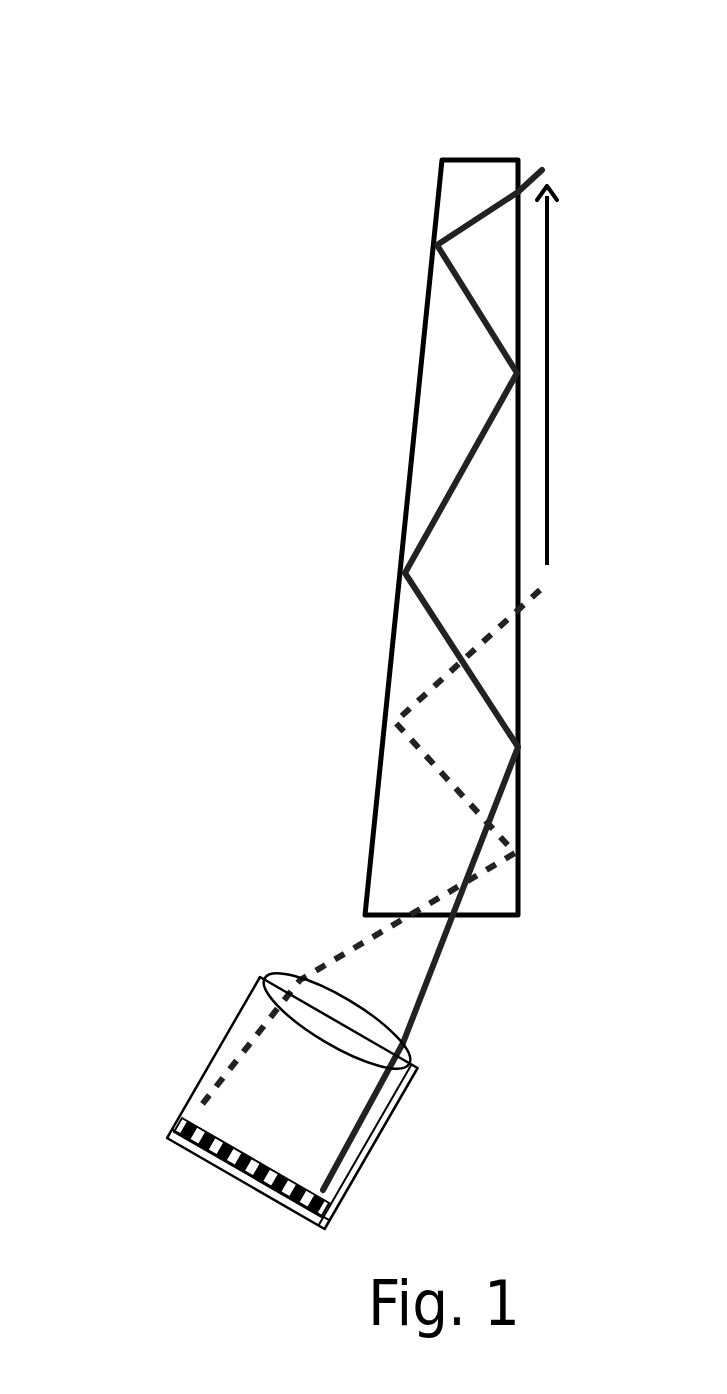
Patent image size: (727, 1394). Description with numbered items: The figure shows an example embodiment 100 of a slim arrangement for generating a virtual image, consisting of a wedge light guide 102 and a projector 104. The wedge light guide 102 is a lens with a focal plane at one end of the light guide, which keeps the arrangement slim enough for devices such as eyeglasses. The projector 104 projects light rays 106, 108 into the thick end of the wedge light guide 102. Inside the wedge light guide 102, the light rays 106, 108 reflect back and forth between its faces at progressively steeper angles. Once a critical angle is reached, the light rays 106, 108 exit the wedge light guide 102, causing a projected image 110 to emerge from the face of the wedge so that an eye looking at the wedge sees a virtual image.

The example embodiment 100 is at (115, 57).
The wedge light guide 102 is at (456, 160).
The projector 104 is at (260, 977).
The light ray 106 is at (545, 588).
The light ray 108 is at (544, 168).
The projected image 110 is at (548, 380).